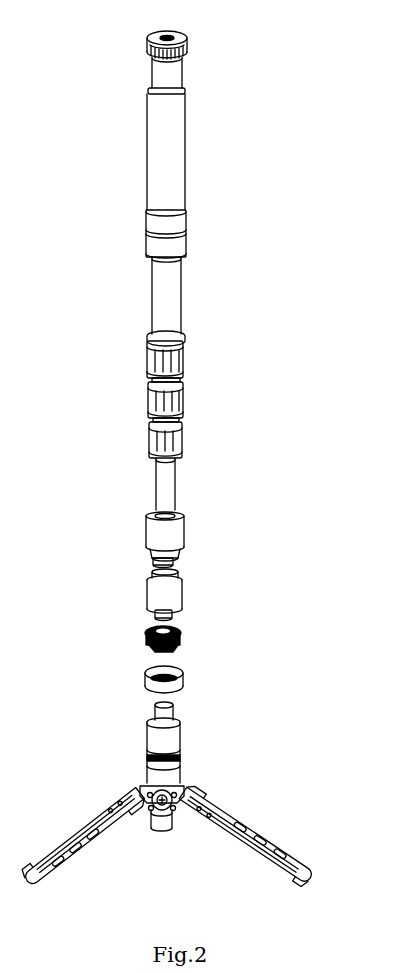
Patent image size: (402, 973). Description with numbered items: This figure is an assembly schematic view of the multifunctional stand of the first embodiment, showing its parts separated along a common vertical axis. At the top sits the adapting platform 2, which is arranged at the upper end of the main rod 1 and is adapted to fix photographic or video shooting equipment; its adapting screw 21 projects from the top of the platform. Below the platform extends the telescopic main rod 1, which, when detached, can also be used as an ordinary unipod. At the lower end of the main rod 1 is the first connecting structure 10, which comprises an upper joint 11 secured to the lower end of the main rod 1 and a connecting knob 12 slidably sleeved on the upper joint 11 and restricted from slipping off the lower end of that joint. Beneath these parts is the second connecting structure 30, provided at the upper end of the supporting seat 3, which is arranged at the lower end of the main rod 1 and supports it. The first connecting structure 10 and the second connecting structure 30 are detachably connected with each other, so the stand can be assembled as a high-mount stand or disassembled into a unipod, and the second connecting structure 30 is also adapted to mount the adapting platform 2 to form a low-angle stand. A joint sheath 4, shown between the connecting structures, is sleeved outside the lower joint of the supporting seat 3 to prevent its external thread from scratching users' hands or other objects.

The adapting screw 21 is at (151, 39).
The adapting platform 2 is at (183, 61).
The main rod 1 is at (183, 451).
The first connecting structure 10 is at (247, 566).
The connecting knob 12 is at (183, 529).
The upper joint 11 is at (183, 590).
The second connecting structure 30 is at (182, 642).
The joint sheath 4 is at (184, 685).
The supporting seat 3 is at (181, 775).